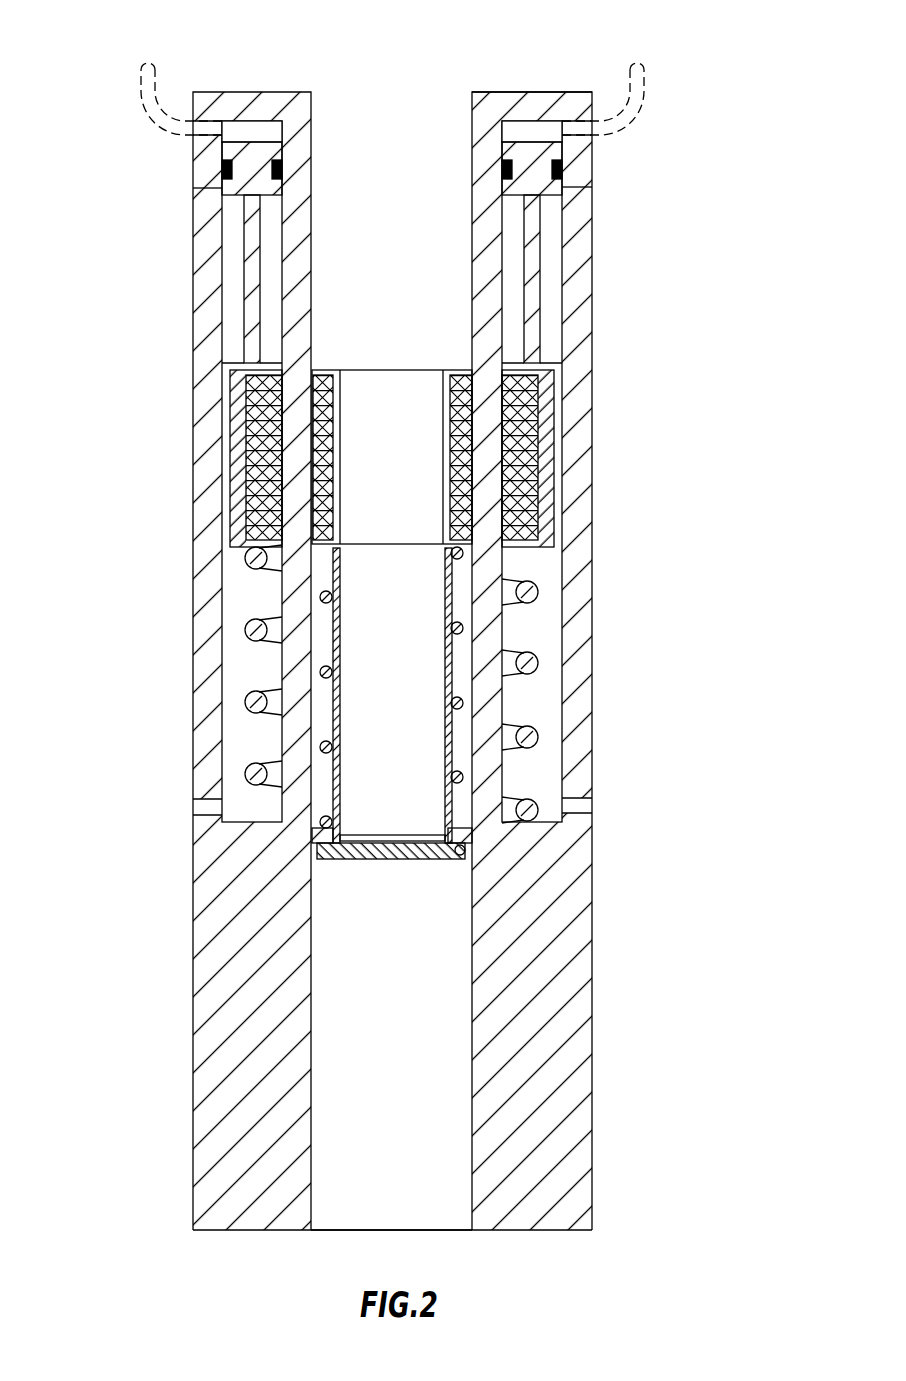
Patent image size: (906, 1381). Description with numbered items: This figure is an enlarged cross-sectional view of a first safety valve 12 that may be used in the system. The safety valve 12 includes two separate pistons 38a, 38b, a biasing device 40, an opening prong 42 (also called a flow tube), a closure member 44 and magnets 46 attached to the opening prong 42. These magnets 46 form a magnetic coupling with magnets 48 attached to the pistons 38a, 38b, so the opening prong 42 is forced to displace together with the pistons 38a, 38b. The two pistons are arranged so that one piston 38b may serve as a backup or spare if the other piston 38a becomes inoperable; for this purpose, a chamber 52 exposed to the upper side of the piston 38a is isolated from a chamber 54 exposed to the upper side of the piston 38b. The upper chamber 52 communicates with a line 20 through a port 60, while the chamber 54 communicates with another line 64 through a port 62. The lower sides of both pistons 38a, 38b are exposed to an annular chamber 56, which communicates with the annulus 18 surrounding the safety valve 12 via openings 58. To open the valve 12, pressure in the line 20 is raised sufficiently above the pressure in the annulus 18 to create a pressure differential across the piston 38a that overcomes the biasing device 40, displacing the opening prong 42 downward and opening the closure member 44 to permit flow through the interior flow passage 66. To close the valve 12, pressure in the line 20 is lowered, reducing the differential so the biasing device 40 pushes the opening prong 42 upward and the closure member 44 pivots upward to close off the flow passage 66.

The safety valve 12 is at (723, 51).
The annulus 18 is at (613, 556).
The line 20 is at (138, 93).
The line 64 is at (648, 88).
The chamber 52 is at (268, 131).
The chamber 54 is at (515, 131).
The port 60 is at (218, 128).
The port 62 is at (568, 128).
The piston 38a is at (222, 188).
The piston 38b is at (562, 187).
The magnets 48 is at (245, 472).
The magnets 46 is at (447, 487).
The annular chamber 56 is at (247, 585).
The biasing device 40 is at (537, 658).
The opening prong 42 is at (336, 682).
The openings 58 is at (580, 806).
The closure member 44 is at (392, 859).
The interior flow passage 66 is at (383, 1050).